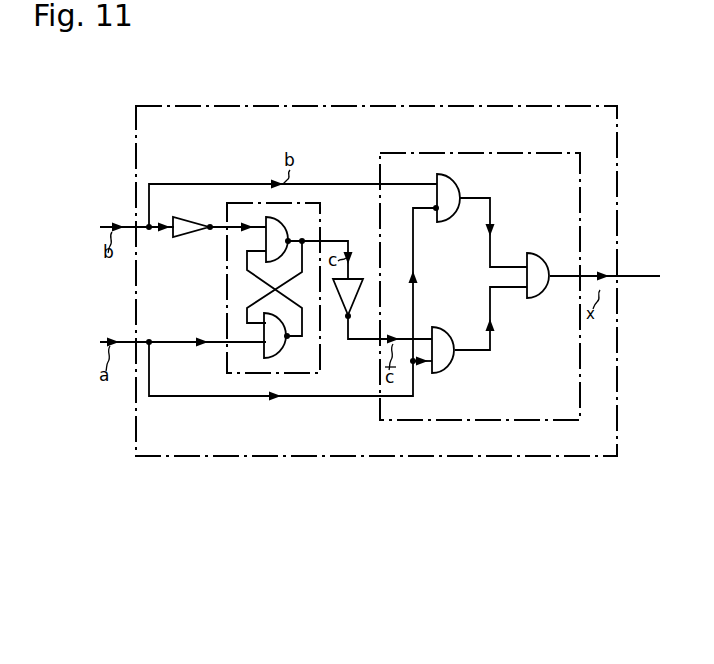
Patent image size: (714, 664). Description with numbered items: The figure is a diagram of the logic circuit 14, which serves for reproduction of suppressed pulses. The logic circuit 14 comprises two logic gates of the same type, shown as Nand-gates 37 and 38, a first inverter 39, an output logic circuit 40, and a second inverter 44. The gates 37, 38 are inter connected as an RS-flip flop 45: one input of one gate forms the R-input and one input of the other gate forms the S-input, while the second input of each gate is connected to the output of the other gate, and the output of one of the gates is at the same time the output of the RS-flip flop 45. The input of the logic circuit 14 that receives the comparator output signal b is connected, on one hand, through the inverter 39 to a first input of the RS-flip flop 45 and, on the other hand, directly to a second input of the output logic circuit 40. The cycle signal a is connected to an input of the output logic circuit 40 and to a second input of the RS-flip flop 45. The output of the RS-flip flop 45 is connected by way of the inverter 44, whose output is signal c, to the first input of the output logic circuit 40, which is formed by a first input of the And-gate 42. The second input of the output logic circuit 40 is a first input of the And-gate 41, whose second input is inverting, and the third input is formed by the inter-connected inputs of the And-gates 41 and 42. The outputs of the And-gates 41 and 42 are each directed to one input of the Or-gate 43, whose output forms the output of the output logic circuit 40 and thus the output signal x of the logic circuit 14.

The logic circuit 14 is at (505, 447).
The Nand-gate 37 is at (274, 236).
The Nand-gate 38 is at (278, 350).
The first inverter 39 is at (183, 232).
The output logic circuit 40 is at (565, 397).
The And-gate 41 is at (447, 190).
The And-gate 42 is at (446, 357).
The Or-gate 43 is at (538, 295).
The second inverter 44 is at (353, 290).
The RS-flip flop 45 is at (313, 228).